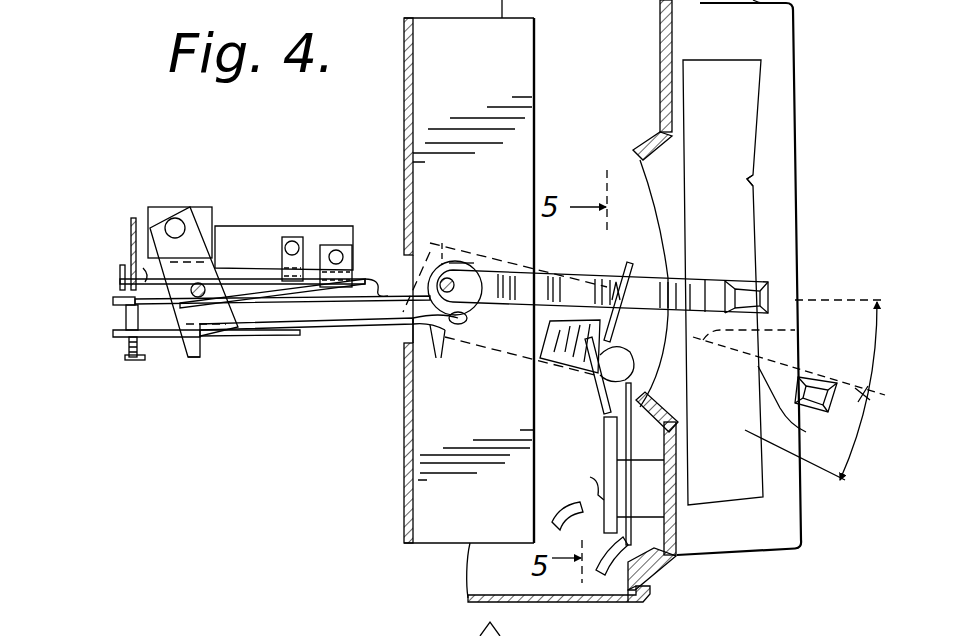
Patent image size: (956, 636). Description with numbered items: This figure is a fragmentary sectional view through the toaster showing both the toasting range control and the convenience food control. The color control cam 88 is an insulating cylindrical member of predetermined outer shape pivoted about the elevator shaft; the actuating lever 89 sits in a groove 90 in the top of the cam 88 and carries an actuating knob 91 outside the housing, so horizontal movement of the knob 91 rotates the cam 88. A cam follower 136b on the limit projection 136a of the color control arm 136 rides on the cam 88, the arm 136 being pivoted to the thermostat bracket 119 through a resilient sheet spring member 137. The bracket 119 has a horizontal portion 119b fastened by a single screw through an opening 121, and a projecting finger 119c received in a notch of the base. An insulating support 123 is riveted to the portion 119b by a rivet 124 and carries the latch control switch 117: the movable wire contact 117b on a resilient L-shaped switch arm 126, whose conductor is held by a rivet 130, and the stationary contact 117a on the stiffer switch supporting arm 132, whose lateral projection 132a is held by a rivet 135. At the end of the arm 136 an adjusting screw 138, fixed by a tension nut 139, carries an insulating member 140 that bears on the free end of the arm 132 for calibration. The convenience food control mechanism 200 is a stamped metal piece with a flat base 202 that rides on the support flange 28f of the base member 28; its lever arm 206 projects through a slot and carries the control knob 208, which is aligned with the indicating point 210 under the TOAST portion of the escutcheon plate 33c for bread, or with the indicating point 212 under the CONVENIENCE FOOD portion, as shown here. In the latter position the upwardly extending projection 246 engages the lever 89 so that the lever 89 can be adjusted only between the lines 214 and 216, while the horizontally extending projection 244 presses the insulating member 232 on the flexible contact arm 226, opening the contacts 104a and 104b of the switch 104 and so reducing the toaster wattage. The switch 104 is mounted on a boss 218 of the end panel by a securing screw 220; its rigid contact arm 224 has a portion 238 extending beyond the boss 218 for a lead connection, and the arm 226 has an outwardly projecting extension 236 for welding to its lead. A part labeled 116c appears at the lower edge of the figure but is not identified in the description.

The base member 28 is at (693, 556).
The horizontal support flange 28f is at (433, 447).
The escutcheon plate 33c is at (717, 78).
The color control cam 88 is at (463, 310).
The actuating lever 89 is at (635, 272).
The groove 90 is at (445, 252).
The actuating knob 91 is at (760, 290).
The switch 104 is at (573, 427).
The contact 104a is at (610, 362).
The contact 104b is at (605, 398).
The bracket portion 116c is at (457, 629).
The switch 117 is at (94, 297).
The stationary contact 117a is at (115, 300).
The movable contact 117b is at (120, 284).
The thermostat bracket 119 is at (131, 250).
The horizontal portion of thermostat bracket 119b is at (197, 243).
The projecting finger 119c is at (192, 360).
The opening 121 is at (236, 330).
The insulating support 123 is at (355, 232).
The rivet 124 is at (176, 226).
The switch arm 126 is at (143, 268).
The rivet 130 is at (291, 241).
The switch supporting arm 132 is at (278, 298).
The lateral projection 132a is at (380, 283).
The rivet 135 is at (334, 250).
The color control arm 136 is at (350, 330).
The projection of color control arm 136a is at (416, 350).
The cam follower 136b is at (452, 343).
The resilient sheet spring member 137 is at (278, 336).
The adjusting screw 138 is at (128, 362).
The tension nut 139 is at (125, 340).
The insulating member 140 is at (123, 335).
The convenience food control mechanism 200 is at (477, 217).
The base surface 202 is at (500, 262).
The lever arm 206 is at (795, 330).
The control knob 208 is at (825, 383).
The indicating point 210 is at (760, 173).
The indicating point 212 is at (806, 432).
The line 214 is at (842, 302).
The line 216 is at (836, 484).
The boss 218 is at (653, 505).
The securing screw 220 is at (573, 480).
The contact arm 224 is at (645, 404).
The contact arm 226 is at (610, 430).
The insulating member 232 is at (583, 342).
The extension 236 is at (580, 507).
The portion of contact arm 238 is at (660, 560).
The horizontally extending projection 244 is at (607, 340).
The upwardly extending projection 246 is at (620, 268).